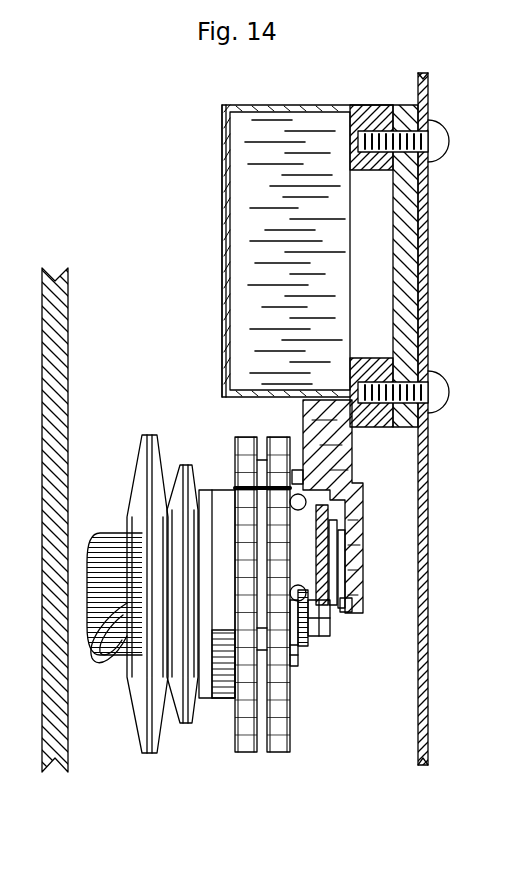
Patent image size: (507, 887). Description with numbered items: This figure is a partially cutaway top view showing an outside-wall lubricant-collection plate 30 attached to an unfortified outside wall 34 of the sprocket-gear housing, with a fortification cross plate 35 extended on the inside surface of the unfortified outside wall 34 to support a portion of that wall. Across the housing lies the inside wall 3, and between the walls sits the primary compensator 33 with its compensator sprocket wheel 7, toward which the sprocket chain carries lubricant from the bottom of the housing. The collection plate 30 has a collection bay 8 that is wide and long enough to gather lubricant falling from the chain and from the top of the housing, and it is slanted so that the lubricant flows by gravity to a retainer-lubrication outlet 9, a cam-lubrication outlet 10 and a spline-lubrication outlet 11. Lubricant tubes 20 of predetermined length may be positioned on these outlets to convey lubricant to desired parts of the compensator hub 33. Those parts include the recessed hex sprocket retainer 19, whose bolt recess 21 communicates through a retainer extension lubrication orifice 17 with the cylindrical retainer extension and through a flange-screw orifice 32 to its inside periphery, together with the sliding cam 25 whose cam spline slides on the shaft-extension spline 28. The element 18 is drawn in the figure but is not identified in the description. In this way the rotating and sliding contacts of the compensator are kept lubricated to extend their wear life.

The inside wall 3 is at (58, 318).
The compensator sprocket wheel 7 is at (278, 737).
The collection bay 8 is at (292, 222).
The retainer-lubrication outlet 9 is at (345, 586).
The cam-lubrication outlet 10 is at (365, 502).
The spline-lubrication outlet 11 is at (320, 478).
The retainer extension lubrication orifice 17 is at (318, 640).
The sleeve 18 is at (304, 665).
The recessed hex sprocket retainer 19 is at (322, 636).
The lubricant tube 20 is at (350, 441).
The bolt recess 21 is at (339, 566).
The sliding cam 25 is at (225, 699).
The shaft-extension spline 28 is at (110, 658).
The outside-wall lubricant-collection plate 30 is at (224, 107).
The flange-screw orifice 32 is at (330, 541).
The primary compensator 33 is at (214, 462).
The unfortified outside wall 34 is at (420, 258).
The fortification cross plate 35 is at (406, 304).